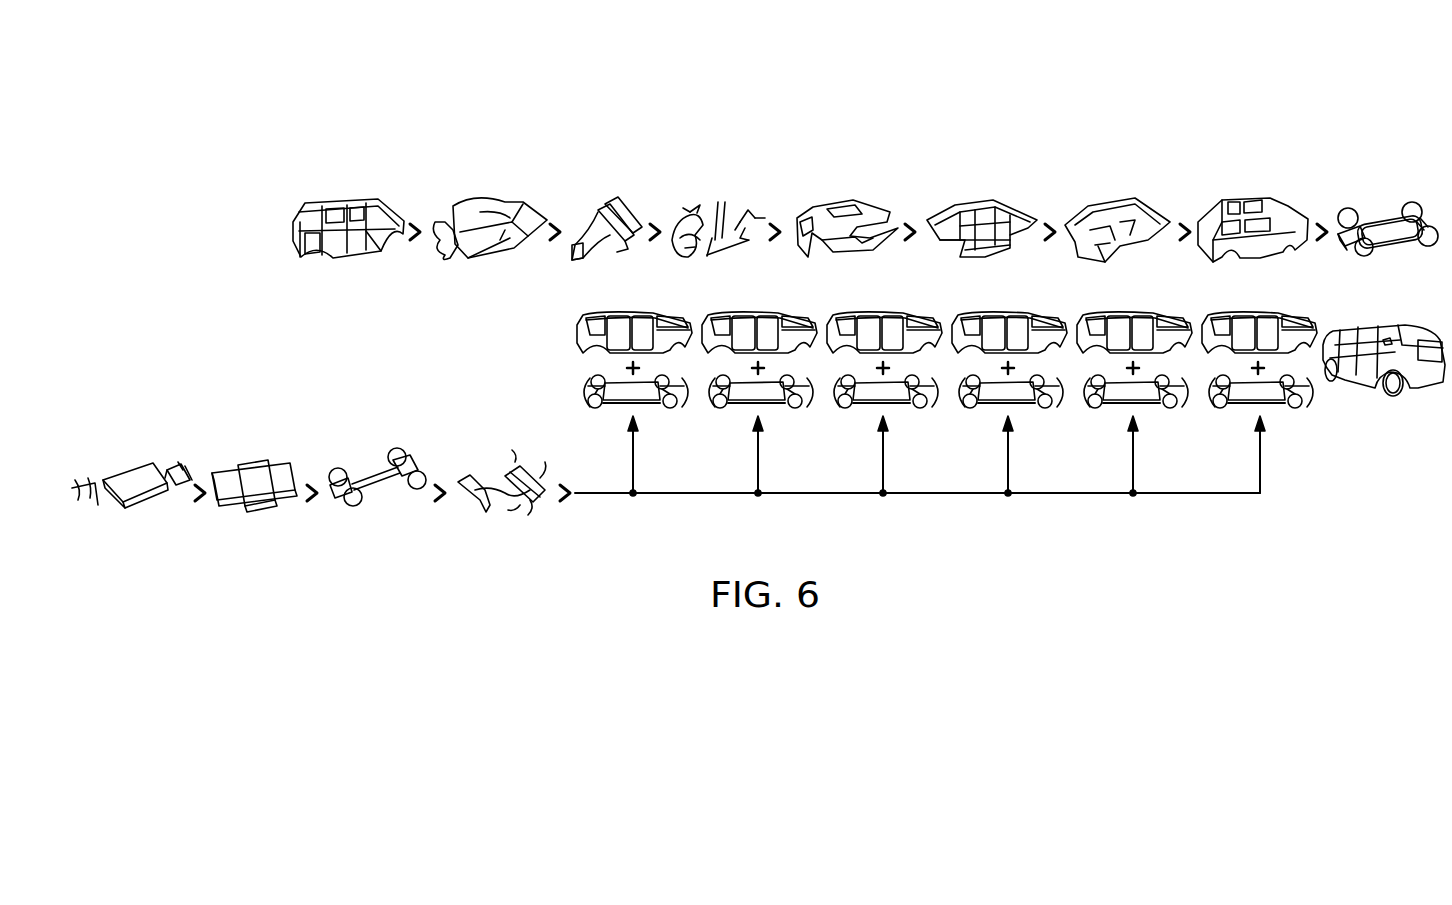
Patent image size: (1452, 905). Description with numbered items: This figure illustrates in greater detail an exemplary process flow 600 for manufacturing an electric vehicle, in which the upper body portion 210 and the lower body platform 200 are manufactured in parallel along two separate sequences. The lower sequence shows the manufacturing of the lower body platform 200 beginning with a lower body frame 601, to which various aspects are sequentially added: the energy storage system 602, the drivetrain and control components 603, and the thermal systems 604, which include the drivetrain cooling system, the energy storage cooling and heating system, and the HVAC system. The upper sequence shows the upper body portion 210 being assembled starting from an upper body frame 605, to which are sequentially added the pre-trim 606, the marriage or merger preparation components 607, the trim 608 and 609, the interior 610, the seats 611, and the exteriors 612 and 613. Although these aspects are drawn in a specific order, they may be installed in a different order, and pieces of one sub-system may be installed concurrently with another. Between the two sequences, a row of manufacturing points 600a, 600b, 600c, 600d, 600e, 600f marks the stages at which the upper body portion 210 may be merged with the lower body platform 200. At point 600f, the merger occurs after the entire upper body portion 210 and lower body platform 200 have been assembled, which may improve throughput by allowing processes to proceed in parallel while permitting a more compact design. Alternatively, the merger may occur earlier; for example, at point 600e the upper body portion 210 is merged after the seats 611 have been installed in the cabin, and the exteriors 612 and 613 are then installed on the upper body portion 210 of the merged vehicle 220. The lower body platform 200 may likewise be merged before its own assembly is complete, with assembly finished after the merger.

The process flow 600 is at (552, 96).
The lower body frame 601 is at (142, 505).
The energy storage system 602 is at (258, 503).
The drivetrain and control components 603 is at (350, 510).
The thermal systems 604 is at (525, 512).
The upper body frame 605 is at (342, 197).
The pre-trim 606 is at (485, 200).
The marriage or merger preparation components 607 is at (605, 198).
The trim 608 is at (690, 207).
The trim 609 is at (866, 200).
The interior 610 is at (995, 200).
The seats 611 is at (1136, 200).
The exterior 612 is at (1262, 196).
The exterior 613 is at (1416, 200).
The manufacturing point 600a is at (633, 462).
The manufacturing point 600b is at (775, 404).
The manufacturing point 600c is at (900, 404).
The manufacturing point 600d is at (1025, 404).
The manufacturing point 600e is at (1150, 404).
The manufacturing point 600f is at (1288, 385).
The lower body platform 200 is at (1283, 412).
The upper body portion 210 is at (1288, 315).
The merged vehicle 220 is at (1400, 392).